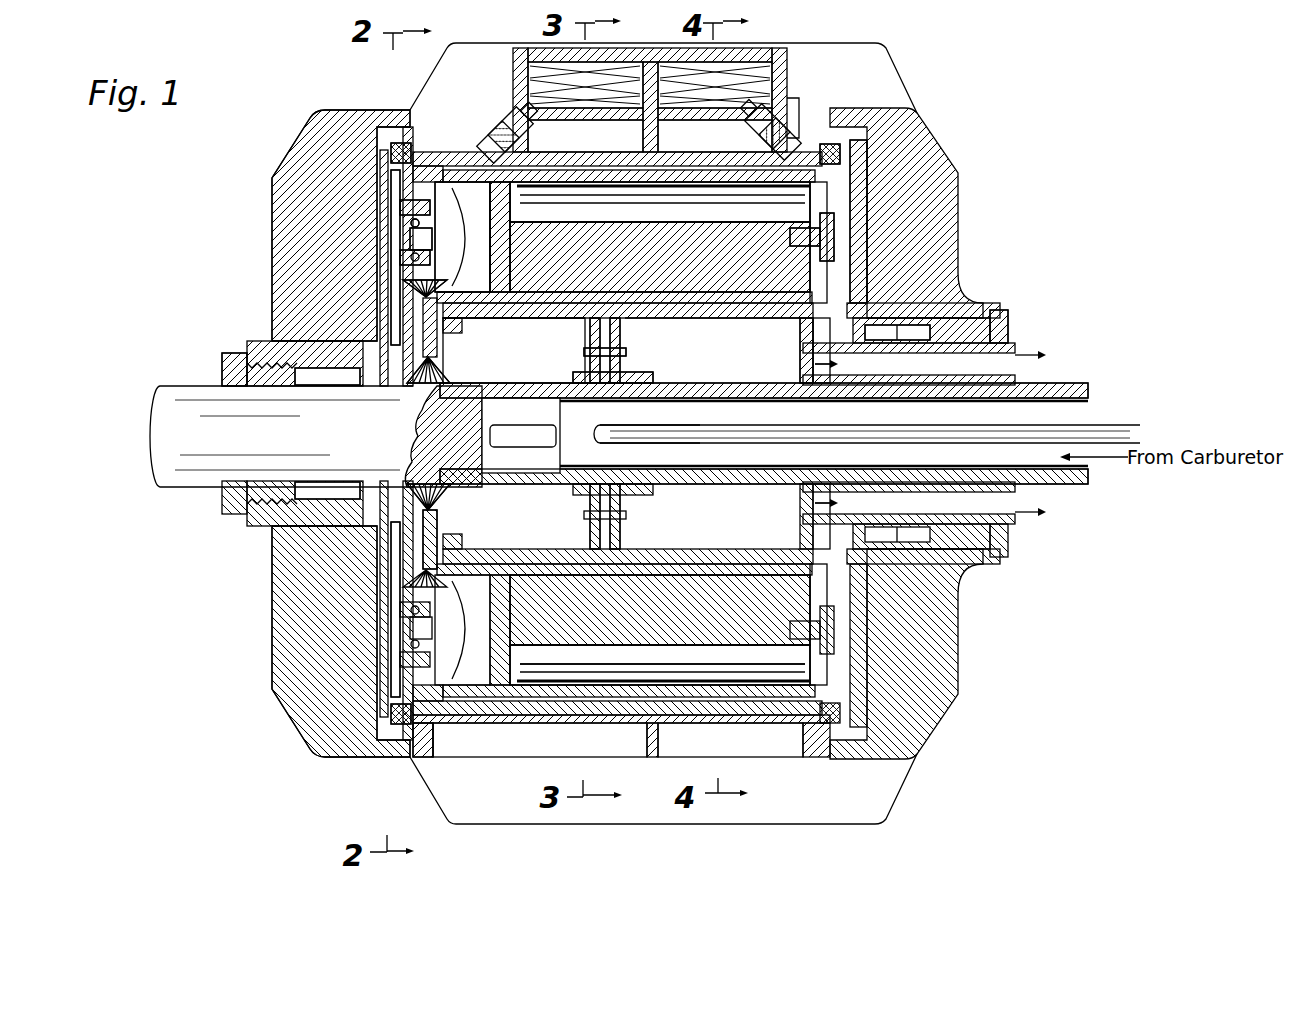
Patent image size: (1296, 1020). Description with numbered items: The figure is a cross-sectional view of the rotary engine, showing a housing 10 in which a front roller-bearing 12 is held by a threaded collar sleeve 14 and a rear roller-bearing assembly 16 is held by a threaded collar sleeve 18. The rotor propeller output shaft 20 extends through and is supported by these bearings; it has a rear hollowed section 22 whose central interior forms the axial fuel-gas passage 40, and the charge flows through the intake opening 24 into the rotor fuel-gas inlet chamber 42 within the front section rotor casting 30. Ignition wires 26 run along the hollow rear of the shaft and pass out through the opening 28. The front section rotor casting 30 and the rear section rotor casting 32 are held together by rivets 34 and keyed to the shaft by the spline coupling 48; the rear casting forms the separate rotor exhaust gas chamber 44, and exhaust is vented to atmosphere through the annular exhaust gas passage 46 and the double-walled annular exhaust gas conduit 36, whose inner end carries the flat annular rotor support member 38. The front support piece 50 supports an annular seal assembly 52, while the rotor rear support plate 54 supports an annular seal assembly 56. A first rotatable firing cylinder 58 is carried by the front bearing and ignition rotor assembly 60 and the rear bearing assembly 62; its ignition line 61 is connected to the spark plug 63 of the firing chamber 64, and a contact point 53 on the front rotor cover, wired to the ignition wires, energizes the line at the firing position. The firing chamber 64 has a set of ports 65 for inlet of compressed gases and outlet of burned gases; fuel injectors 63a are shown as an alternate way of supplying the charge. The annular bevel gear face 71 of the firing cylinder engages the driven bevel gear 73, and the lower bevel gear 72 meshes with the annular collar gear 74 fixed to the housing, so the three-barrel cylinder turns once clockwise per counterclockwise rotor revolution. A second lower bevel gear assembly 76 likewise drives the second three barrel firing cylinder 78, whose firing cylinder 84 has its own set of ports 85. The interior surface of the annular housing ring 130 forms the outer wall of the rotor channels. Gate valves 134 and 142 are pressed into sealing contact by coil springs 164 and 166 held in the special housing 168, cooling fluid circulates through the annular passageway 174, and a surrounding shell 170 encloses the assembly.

The housing 10 is at (272, 233).
The front roller-bearing 12 is at (305, 386).
The threaded collar sleeve 14 is at (222, 355).
The rear roller-bearing assembly 16 is at (903, 324).
The threaded collar sleeve 18 is at (1009, 326).
The rotor propeller output shaft 20 is at (165, 418).
The rear hollowed section 22 is at (521, 435).
The intake opening 24 is at (486, 440).
The ignition wires 26 is at (788, 440).
The opening 28 is at (538, 422).
The front section rotor casting 30 is at (522, 318).
The rear section rotor casting 32 is at (698, 318).
The rivets 34 is at (628, 352).
The double-walled annular exhaust gas conduit 36 is at (812, 364).
The flat annular rotor support member 38 is at (800, 328).
The axial fuel-gas passage 40 is at (667, 472).
The rotor fuel-gas inlet chamber 42 is at (490, 367).
The rotor exhaust gas chamber 44 is at (714, 367).
The annular exhaust gas passage 46 is at (910, 380).
The spline coupling 48 is at (573, 377).
The front support piece 50 is at (380, 306).
The annular seal assembly 52 is at (393, 152).
The contact point 53 is at (392, 205).
The rotor rear support plate 54 is at (851, 265).
The annular seal assembly 56 is at (841, 153).
The first rotatable firing cylinder 58 is at (657, 274).
The front bearing and ignition rotor assembly 60 is at (402, 232).
The ignition line 61 is at (428, 215).
The rear bearing assembly 62 is at (836, 232).
The spark plug 63 is at (508, 246).
The fuel injectors 63a is at (503, 110).
The firing chamber 64 is at (600, 230).
The set of ports 65 is at (562, 190).
The annular bevel gear face 71 is at (452, 303).
The lower bevel gear 72 is at (410, 370).
The driven bevel gear 73 is at (412, 282).
The annular collar gear 74 is at (400, 380).
The second lower bevel gear assembly 76 is at (400, 550).
The second three barrel firing cylinder 78 is at (692, 635).
The firing cylinder 84 is at (640, 603).
The set of ports 85 is at (710, 566).
The annular housing ring 130 is at (708, 723).
The gate valve 134 is at (583, 120).
The gate valve 142 is at (799, 100).
The coil spring 164 is at (560, 86).
The coil spring 166 is at (745, 86).
The special housing 168 is at (650, 62).
The outer shell 170 is at (905, 90).
The annular passageway 174 is at (432, 758).